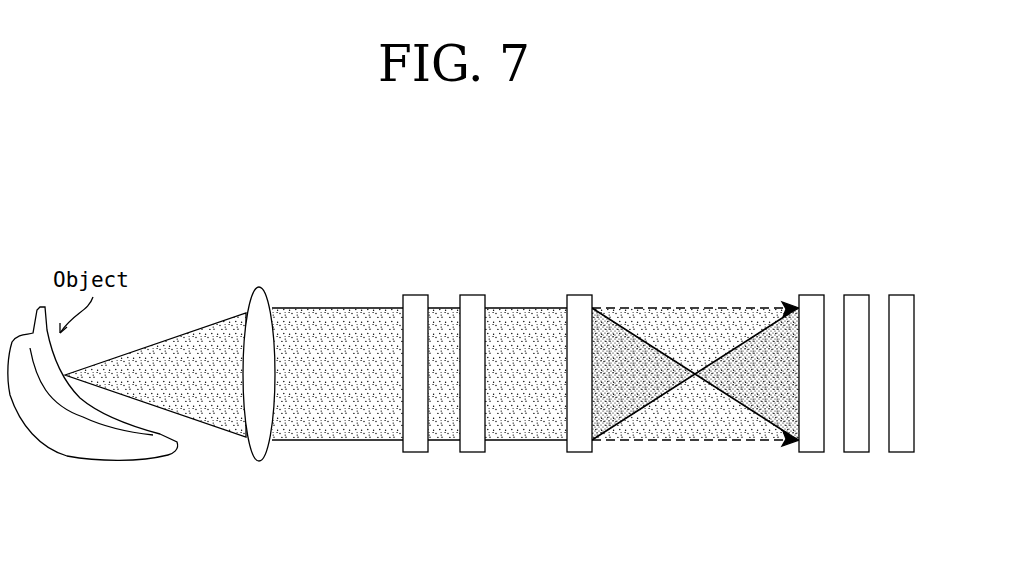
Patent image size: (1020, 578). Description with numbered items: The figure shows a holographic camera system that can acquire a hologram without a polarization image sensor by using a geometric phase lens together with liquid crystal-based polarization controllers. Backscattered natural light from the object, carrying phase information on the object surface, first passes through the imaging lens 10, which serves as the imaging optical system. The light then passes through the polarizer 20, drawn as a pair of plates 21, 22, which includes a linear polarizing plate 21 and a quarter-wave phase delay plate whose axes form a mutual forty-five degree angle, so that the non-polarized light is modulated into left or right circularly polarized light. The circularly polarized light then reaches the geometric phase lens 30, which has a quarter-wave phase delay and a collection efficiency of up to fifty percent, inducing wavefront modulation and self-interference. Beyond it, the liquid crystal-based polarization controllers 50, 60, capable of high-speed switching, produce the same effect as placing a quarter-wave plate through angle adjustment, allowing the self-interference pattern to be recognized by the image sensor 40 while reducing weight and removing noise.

The imaging lens 10 is at (260, 287).
The polarizer 20 is at (503, 219).
The linear polarizing plate 21 is at (415, 294).
The second filter 22 is at (474, 294).
The geometric phase lens 30 is at (578, 294).
The image sensor 40 is at (901, 294).
The liquid crystal-based polarization controller 50 is at (856, 294).
The liquid crystal-based polarization controller 60 is at (810, 294).